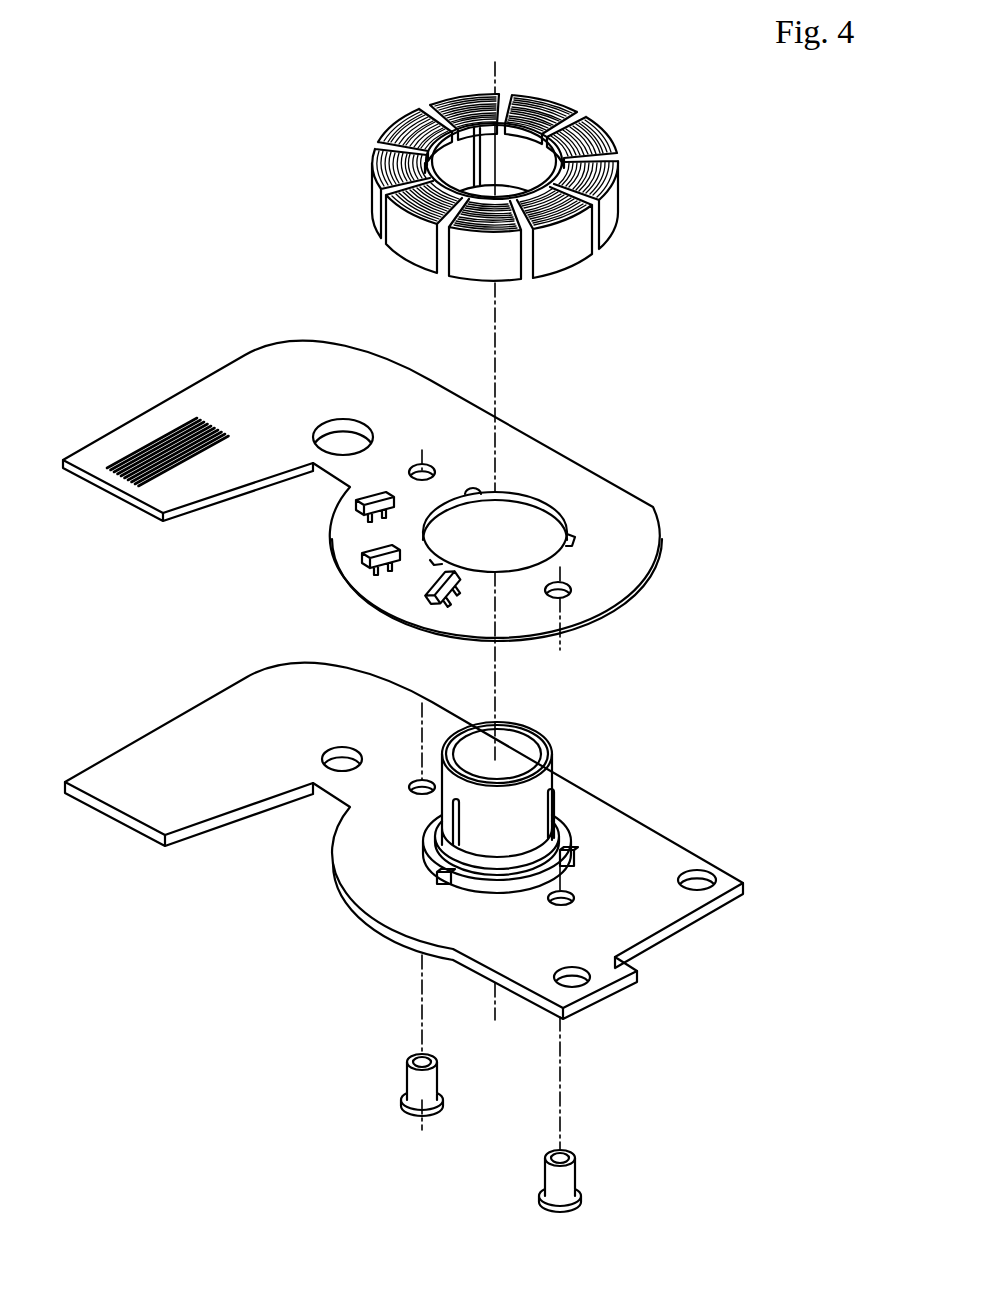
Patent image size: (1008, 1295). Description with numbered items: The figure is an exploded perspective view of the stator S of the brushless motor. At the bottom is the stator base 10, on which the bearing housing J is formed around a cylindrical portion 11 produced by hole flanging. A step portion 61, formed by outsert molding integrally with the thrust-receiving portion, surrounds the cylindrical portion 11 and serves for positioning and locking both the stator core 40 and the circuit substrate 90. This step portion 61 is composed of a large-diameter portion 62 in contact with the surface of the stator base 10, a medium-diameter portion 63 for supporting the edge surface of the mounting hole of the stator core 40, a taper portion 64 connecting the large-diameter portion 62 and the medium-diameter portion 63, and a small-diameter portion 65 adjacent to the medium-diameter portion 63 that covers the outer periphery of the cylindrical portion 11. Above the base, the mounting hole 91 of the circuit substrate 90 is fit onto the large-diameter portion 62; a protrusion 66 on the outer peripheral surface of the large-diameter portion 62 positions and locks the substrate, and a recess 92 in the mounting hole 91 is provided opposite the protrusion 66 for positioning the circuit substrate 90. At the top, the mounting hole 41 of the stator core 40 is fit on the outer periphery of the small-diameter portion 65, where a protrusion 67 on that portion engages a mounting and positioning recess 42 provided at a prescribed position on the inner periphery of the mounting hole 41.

The stator S is at (180, 55).
The stator core 40 is at (607, 208).
The mounting hole 41 is at (458, 125).
The mounting and positioning recess 42 is at (553, 173).
The circuit substrate 90 is at (258, 388).
The mounting hole 91 is at (505, 490).
The recess 92 is at (573, 540).
The stator base 10 is at (203, 740).
The bearing housing J is at (438, 736).
The cylindrical portion 11 is at (548, 745).
The step portion 61 is at (248, 918).
The large-diameter portion 62 is at (443, 862).
The medium-diameter portion 63 is at (490, 868).
The taper portion 64 is at (443, 863).
The small-diameter portion 65 is at (440, 860).
The protrusion 66 is at (577, 857).
The protrusion 67 is at (445, 822).